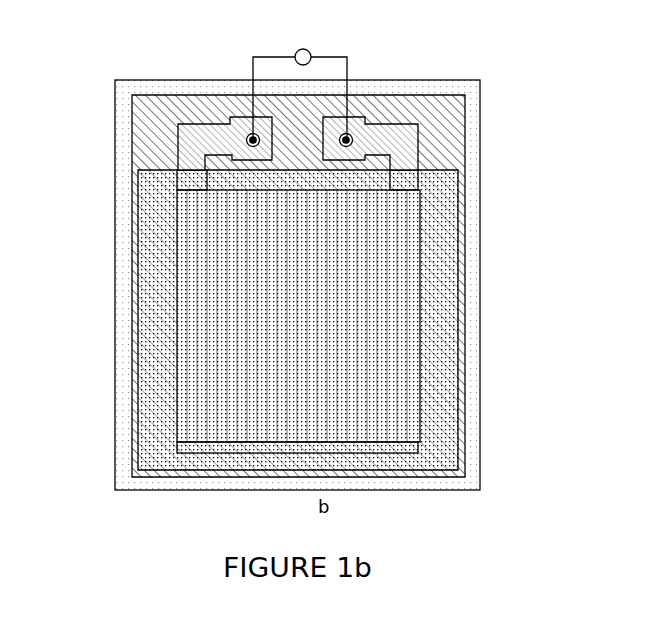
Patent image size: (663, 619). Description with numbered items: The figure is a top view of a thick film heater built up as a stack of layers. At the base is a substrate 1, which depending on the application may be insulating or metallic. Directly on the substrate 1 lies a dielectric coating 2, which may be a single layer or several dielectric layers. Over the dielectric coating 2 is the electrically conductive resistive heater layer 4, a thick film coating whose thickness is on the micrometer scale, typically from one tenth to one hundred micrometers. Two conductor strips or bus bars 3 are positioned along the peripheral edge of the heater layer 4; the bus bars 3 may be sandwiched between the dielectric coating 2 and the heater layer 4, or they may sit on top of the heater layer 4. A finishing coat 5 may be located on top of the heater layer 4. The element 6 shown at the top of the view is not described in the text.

The substrate 1 is at (475, 377).
The dielectric coating 2 is at (458, 297).
The conductor strips/bus bars 3 is at (189, 150).
The electrically conductive resistive heater layer 4 is at (352, 235).
The finishing coat 5 is at (448, 250).
The voltmeter 6 is at (303, 45).